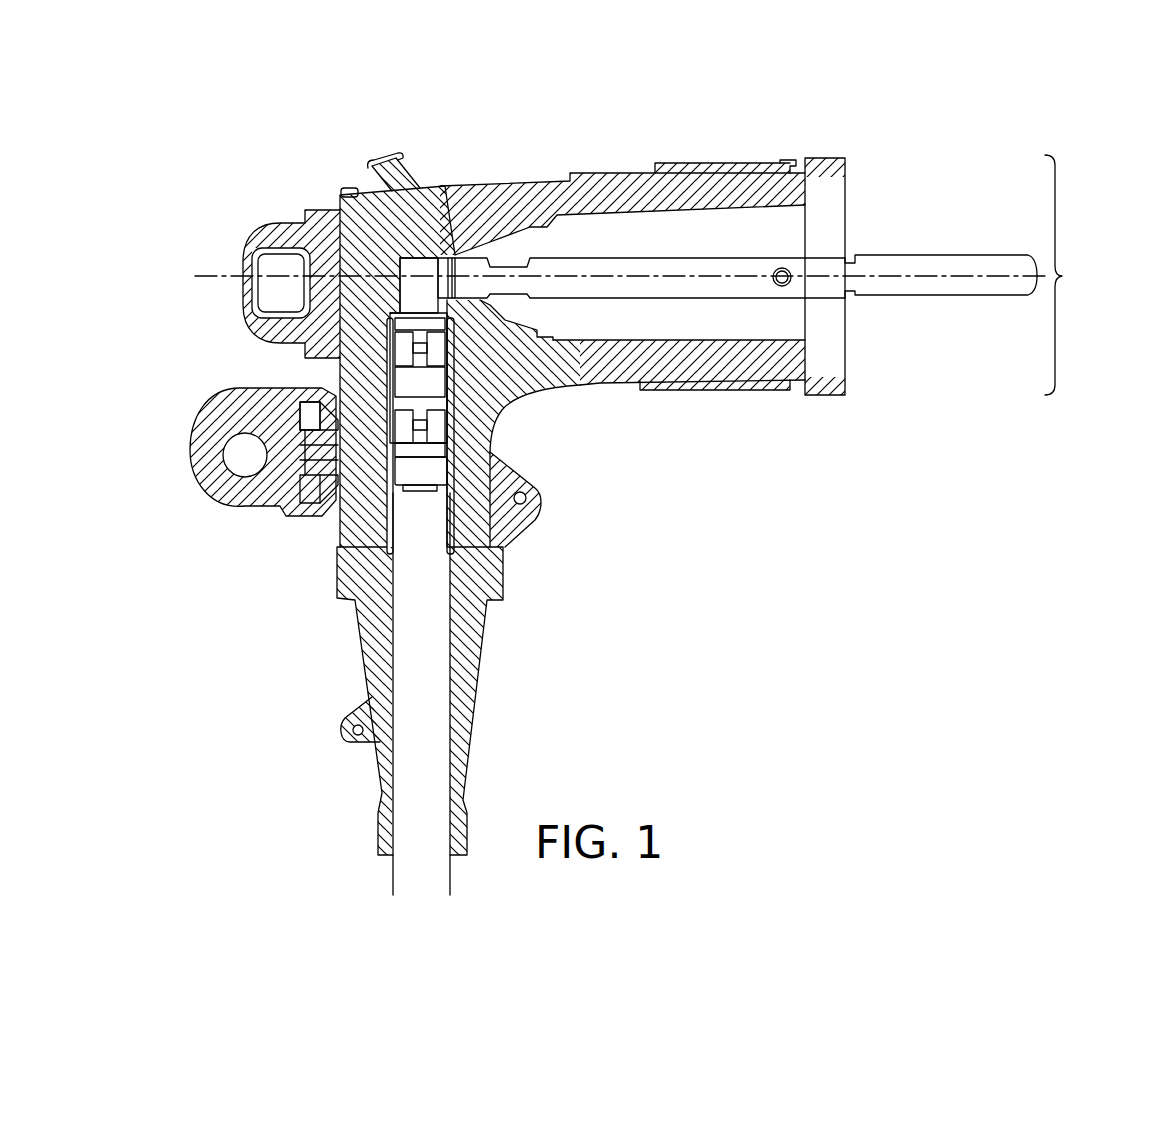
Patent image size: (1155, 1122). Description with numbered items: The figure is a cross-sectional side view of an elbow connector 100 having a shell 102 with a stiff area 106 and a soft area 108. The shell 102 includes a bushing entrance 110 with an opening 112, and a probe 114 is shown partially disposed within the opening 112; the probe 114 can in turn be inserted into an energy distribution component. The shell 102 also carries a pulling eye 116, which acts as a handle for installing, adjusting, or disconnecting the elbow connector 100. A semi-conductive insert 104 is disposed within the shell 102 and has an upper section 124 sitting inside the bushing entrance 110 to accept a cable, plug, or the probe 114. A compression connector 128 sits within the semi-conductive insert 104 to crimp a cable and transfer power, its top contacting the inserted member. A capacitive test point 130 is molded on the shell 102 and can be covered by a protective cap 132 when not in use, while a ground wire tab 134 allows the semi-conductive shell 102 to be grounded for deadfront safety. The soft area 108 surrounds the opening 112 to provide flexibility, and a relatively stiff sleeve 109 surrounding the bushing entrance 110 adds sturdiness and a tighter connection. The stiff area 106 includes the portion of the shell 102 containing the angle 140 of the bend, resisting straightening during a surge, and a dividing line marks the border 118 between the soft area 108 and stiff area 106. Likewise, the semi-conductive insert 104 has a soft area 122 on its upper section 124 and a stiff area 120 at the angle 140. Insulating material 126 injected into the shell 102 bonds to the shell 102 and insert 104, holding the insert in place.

The elbow connector 100 is at (253, 186).
The shell 102 is at (500, 728).
The semi-conductive insert 104 is at (468, 530).
The stiff area 106 is at (470, 650).
The soft area 108 is at (693, 163).
The sleeve 109 is at (735, 163).
The bushing entrance 110 is at (982, 275).
The opening 112 is at (845, 195).
The probe 114 is at (885, 300).
The pulling eye 116 is at (243, 272).
The border 118 is at (421, 190).
The stiff area 120 is at (463, 428).
The soft area 122 is at (640, 386).
The upper section 124 is at (573, 192).
The insulating material 126 is at (745, 382).
The compression connector 128 is at (440, 466).
The capacitive test point 130 is at (322, 503).
The protective cap 132 is at (233, 420).
The ground wire tab 134 is at (537, 497).
The angle 140 is at (517, 370).